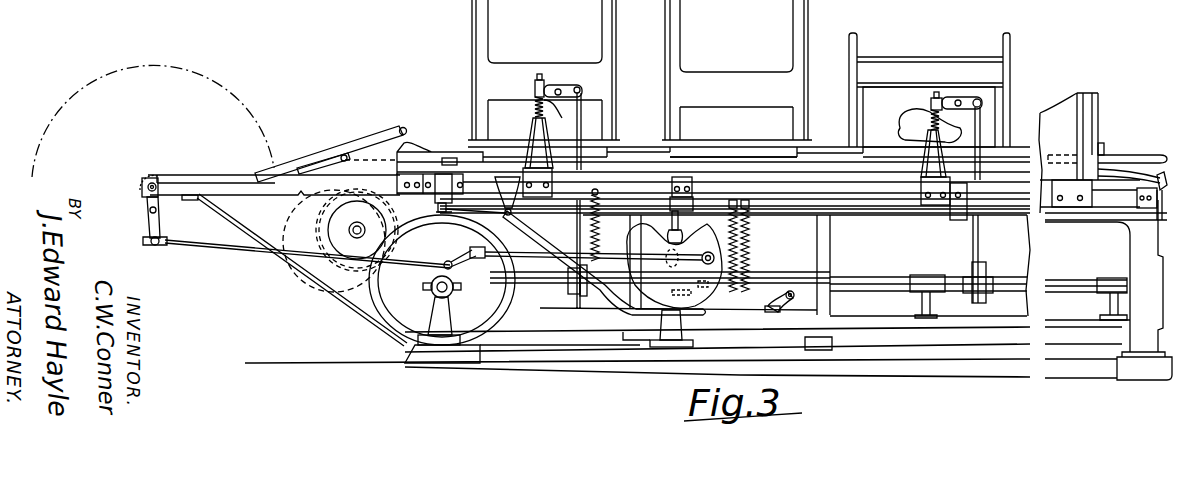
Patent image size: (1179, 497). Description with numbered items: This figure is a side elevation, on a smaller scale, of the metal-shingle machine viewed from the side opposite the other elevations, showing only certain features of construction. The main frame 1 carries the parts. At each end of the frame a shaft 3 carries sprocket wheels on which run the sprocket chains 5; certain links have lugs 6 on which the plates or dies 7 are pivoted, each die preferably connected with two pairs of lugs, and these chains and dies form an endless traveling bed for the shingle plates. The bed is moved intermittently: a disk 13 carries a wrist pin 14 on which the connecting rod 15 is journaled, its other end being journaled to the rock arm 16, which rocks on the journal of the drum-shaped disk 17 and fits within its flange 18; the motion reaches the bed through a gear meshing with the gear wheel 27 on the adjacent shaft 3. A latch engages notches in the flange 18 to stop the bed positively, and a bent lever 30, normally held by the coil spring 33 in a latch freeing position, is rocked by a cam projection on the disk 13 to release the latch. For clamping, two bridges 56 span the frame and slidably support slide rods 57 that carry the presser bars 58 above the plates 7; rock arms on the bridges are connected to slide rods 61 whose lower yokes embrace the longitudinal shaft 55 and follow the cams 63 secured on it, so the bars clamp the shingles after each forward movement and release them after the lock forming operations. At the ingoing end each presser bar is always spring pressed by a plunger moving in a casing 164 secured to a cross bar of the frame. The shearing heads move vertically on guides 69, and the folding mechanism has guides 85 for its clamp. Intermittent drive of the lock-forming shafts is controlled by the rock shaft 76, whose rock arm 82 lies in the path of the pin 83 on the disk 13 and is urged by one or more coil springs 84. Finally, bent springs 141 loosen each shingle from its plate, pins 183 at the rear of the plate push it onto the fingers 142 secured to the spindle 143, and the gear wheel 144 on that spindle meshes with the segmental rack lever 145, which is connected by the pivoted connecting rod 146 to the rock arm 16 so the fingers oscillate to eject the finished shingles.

The main frame 1 is at (1126, 247).
The shaft 3 is at (348, 230).
The sprocket chains 5 is at (320, 286).
The lugs 6 is at (340, 157).
The plates or dies 7 is at (362, 152).
The disk 13 is at (722, 243).
The wrist pin 14 is at (711, 264).
The connecting rod 15 is at (538, 262).
The rock arm 16 is at (463, 273).
The disk 17 is at (498, 336).
The flange 18 is at (400, 343).
The gear wheel 27 is at (360, 270).
The bent lever 30 is at (540, 236).
The coil spring 33 is at (598, 221).
The longitudinal shaft 55 is at (855, 276).
The bridges 56 is at (528, 130).
The slide rods 57 is at (540, 78).
The presser bars 58 is at (720, 150).
The slide rods 61 is at (582, 128).
The cams 63 is at (986, 278).
The guides 69 is at (1087, 98).
The rock shaft 76 is at (790, 290).
The rock arm 82 is at (758, 306).
The pin 83 is at (690, 302).
The coil springs 84 is at (749, 226).
The guides 85 is at (880, 62).
The bent springs 141 is at (408, 146).
The fingers 142 is at (201, 176).
The spindle 143 is at (140, 184).
The gear wheel 144 is at (158, 178).
The segmental rack lever 145 is at (148, 226).
The connecting rod 146 is at (243, 250).
The casing 164 is at (1104, 146).
The pins 183 is at (395, 126).